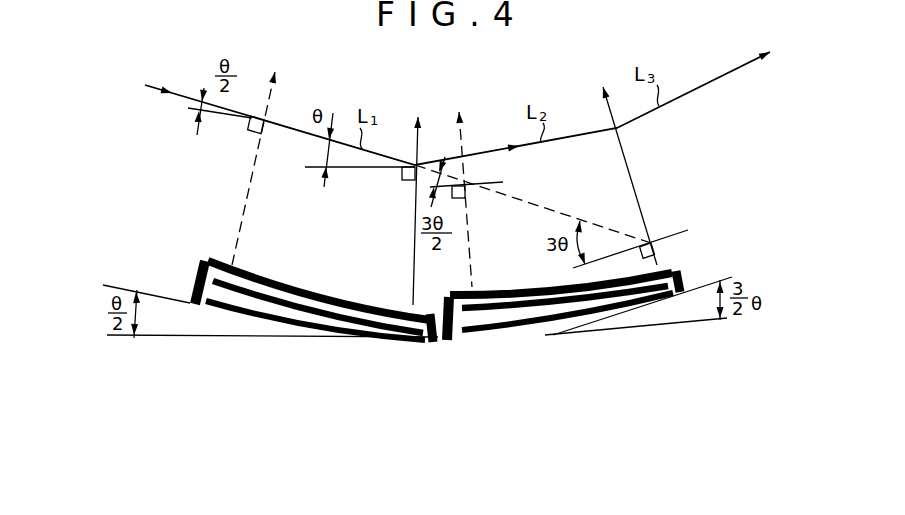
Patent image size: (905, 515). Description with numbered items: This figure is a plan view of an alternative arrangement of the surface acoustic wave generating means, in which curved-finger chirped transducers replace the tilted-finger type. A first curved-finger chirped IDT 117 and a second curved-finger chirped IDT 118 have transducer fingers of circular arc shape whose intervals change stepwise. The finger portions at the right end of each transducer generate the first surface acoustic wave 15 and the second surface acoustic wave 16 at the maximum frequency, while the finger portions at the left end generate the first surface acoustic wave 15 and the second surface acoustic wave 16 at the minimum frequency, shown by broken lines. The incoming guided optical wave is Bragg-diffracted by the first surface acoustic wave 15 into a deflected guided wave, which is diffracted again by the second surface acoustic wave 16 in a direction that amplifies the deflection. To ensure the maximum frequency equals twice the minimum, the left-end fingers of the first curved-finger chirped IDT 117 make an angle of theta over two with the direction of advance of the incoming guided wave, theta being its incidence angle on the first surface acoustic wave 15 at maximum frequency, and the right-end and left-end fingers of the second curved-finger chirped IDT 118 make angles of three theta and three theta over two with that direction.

The first surface acoustic wave 15 is at (270, 103).
The second surface acoustic wave 16 is at (465, 140).
The first curved-finger chirped IDT 117 is at (262, 266).
The second curved-finger chirped IDT 118 is at (503, 297).